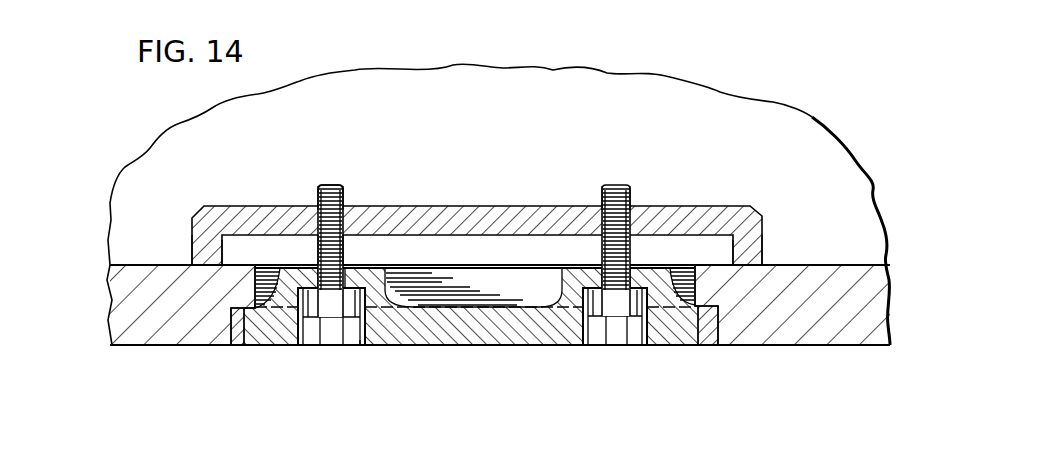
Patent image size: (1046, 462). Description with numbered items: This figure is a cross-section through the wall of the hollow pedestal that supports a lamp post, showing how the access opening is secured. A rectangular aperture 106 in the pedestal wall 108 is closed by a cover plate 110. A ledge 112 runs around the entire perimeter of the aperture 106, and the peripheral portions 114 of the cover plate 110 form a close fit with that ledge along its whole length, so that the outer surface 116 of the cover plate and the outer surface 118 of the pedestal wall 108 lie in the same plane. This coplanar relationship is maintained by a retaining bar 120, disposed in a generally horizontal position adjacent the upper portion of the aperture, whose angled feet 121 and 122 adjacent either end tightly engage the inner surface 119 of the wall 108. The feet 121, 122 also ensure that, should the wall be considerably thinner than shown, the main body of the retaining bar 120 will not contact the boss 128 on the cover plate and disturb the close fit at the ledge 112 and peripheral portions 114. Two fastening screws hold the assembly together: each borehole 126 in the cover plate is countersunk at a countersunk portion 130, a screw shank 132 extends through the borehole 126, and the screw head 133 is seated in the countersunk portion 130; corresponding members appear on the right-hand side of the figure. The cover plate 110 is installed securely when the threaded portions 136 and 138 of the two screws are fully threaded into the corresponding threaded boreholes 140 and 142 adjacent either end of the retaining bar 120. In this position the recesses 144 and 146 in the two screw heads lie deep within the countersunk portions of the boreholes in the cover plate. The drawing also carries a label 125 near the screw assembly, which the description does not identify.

The rectangular aperture 106 is at (518, 287).
The pedestal wall 108 is at (157, 318).
The cover plate 110 is at (452, 327).
The ledge 112 is at (238, 347).
The peripheral portions of cover plate 114 is at (252, 347).
The outer surface of cover plate 116 is at (565, 347).
The outer surface of pedestal wall 118 is at (173, 347).
The inner surface of wall 119 is at (130, 265).
The retaining bar 120 is at (515, 213).
The angled foot 121 is at (200, 250).
The angled foot 122 is at (755, 241).
The bolt end 125 is at (347, 348).
The borehole 126 is at (318, 240).
The boss 128 is at (287, 338).
The countersunk portion 130 is at (313, 331).
The screw shank 132 is at (343, 252).
The screw head 133 is at (330, 318).
The threaded portion 136 is at (340, 186).
The threaded portion 138 is at (618, 187).
The threaded borehole 140 is at (331, 183).
The threaded borehole 142 is at (602, 190).
The recess 144 is at (358, 354).
The recess 146 is at (620, 323).